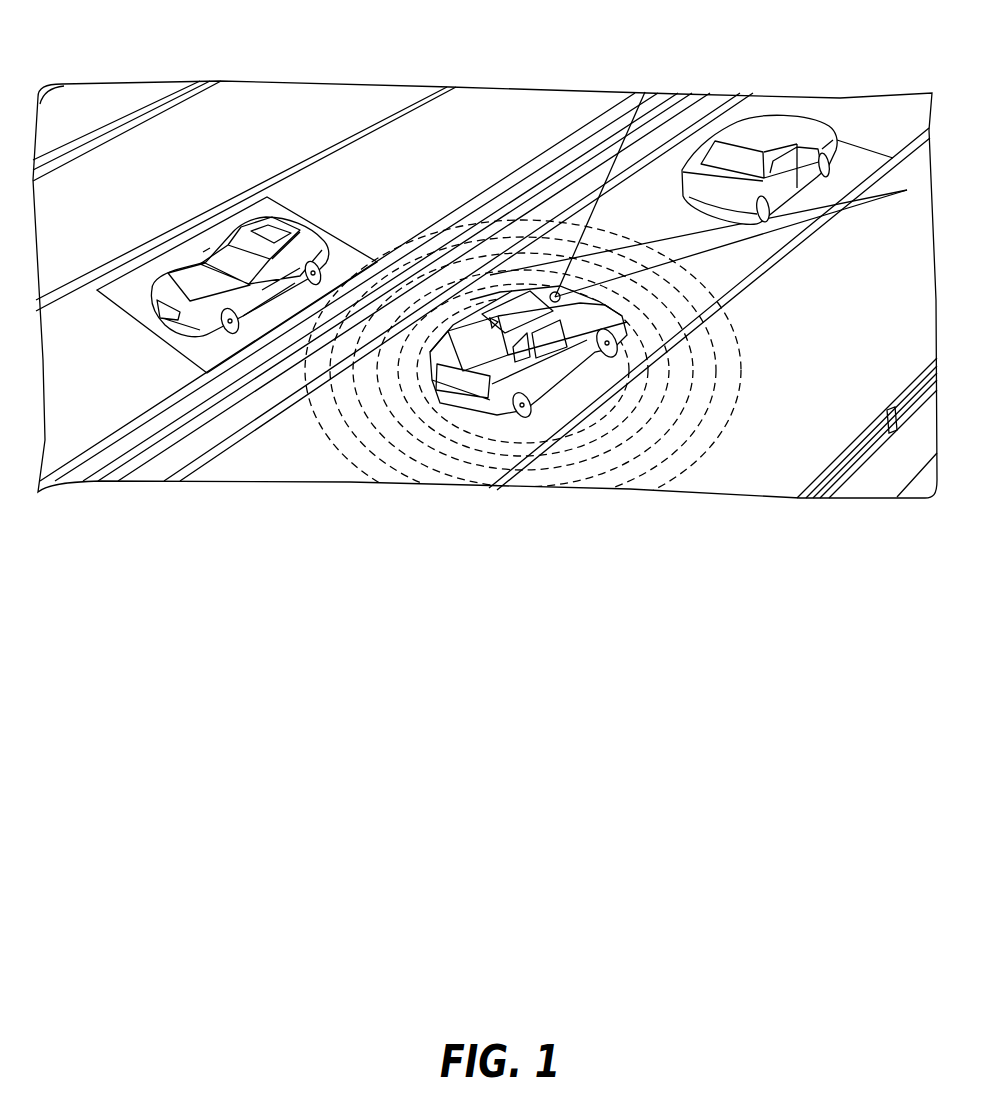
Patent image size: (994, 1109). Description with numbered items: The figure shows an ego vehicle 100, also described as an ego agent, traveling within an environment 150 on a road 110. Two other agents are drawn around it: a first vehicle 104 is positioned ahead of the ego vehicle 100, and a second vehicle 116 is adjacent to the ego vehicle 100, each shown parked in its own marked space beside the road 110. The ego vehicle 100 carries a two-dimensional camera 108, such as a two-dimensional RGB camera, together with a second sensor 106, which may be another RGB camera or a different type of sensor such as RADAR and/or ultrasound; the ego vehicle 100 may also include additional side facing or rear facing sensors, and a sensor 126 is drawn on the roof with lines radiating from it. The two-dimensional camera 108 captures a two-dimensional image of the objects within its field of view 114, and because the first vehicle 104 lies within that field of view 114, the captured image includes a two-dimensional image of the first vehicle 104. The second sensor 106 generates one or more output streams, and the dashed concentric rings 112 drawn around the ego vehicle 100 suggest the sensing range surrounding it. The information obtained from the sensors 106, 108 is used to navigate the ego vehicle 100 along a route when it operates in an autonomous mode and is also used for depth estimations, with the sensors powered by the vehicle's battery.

The ego vehicle 100 is at (568, 352).
The first vehicle 104 is at (787, 120).
The second sensor 106 is at (486, 318).
The 2D camera 108 is at (500, 316).
The road 110 is at (878, 311).
The sensor detection range 112 is at (700, 452).
The field of view 114 is at (643, 203).
The second vehicle 116 is at (313, 245).
The sensor 126 is at (553, 294).
The environment 150 is at (405, 83).